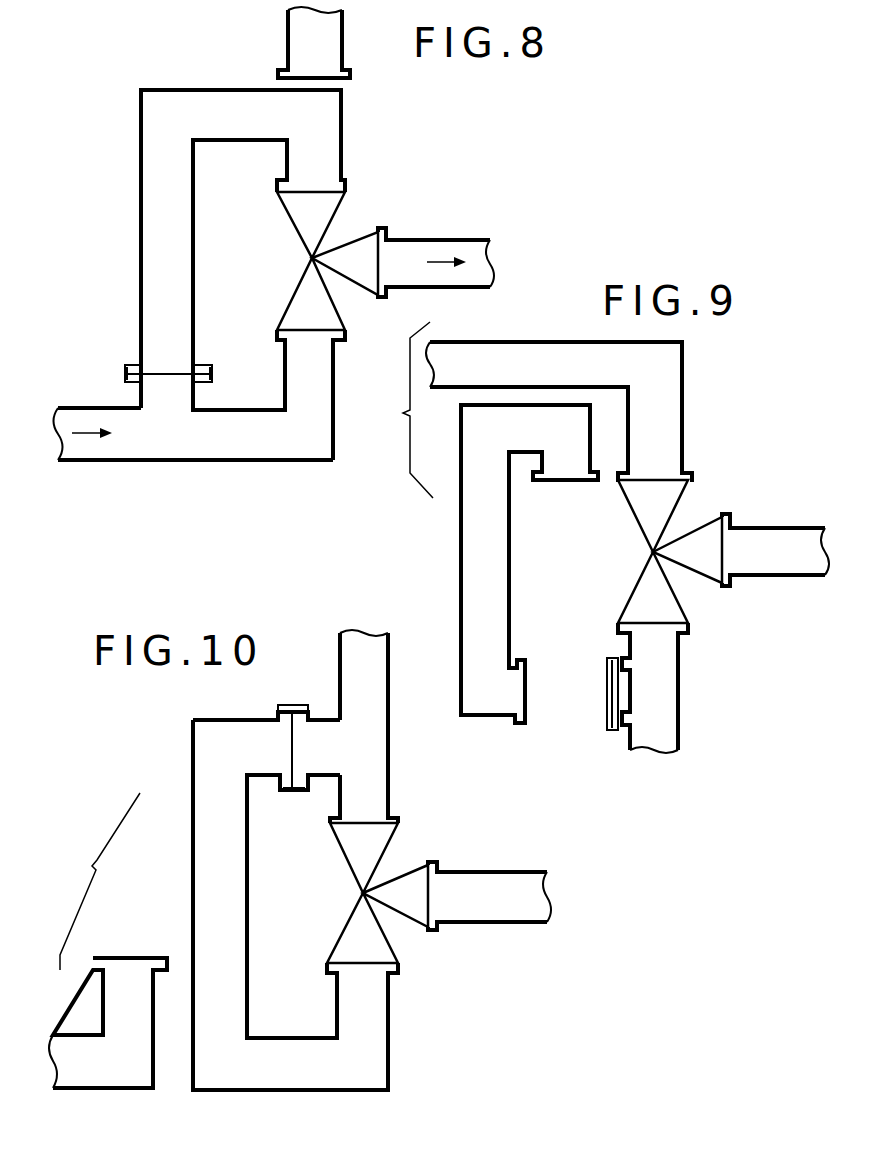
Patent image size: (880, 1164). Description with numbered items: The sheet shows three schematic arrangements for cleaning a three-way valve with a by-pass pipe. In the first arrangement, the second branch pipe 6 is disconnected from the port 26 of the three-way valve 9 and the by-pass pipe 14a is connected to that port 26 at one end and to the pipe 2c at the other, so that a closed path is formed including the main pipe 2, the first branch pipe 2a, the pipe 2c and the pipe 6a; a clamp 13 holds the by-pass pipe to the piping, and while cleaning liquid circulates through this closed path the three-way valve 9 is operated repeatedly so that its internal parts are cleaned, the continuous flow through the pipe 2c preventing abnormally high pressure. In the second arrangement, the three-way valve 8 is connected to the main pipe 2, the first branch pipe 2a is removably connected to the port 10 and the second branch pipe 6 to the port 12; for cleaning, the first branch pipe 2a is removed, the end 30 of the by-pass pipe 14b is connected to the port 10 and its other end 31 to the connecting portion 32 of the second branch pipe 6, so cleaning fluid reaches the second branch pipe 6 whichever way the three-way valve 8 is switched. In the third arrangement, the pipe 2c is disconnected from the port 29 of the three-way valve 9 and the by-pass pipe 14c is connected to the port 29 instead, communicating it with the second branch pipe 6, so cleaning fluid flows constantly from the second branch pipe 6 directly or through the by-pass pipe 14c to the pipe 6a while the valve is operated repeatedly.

In FIG. 8, the second branch pipe 6 is at (334, 42).
In FIG. 9, the second branch pipe 6 is at (680, 701).
In FIG. 10, the second branch pipe 6 is at (388, 682).
In FIG. 8, the pipe 6a is at (453, 240).
In FIG. 10, the pipe 6a is at (500, 873).
In FIG. 8, the by-pass pipe 14a is at (152, 196).
In FIG. 9, the by-pass pipe 14b is at (468, 571).
In FIG. 10, the by-pass pipe 14c is at (201, 823).
In FIG. 8, the port 26 is at (318, 192).
In FIG. 8, the three-way valve 9 is at (385, 195).
In FIG. 10, the three-way valve 9 is at (417, 849).
In FIG. 8, the clamp 13 is at (125, 372).
In FIG. 10, the clamp 13 is at (292, 705).
In FIG. 8, the pipe 2c is at (222, 447).
In FIG. 10, the pipe 2c is at (118, 1083).
In FIG. 9, the first branch pipe 2a is at (548, 343).
In FIG. 9, the main pipe 2 is at (793, 565).
In FIG. 9, the port 10 is at (656, 480).
In FIG. 9, the port 12 is at (645, 622).
In FIG. 9, the three-way valve 8 is at (709, 592).
In FIG. 9, the end of by-pass pipe 30 is at (562, 484).
In FIG. 9, the end of by-pass pipe 31 is at (526, 700).
In FIG. 9, the connecting portion 32 is at (606, 702).
In FIG. 10, the port 29 is at (365, 966).